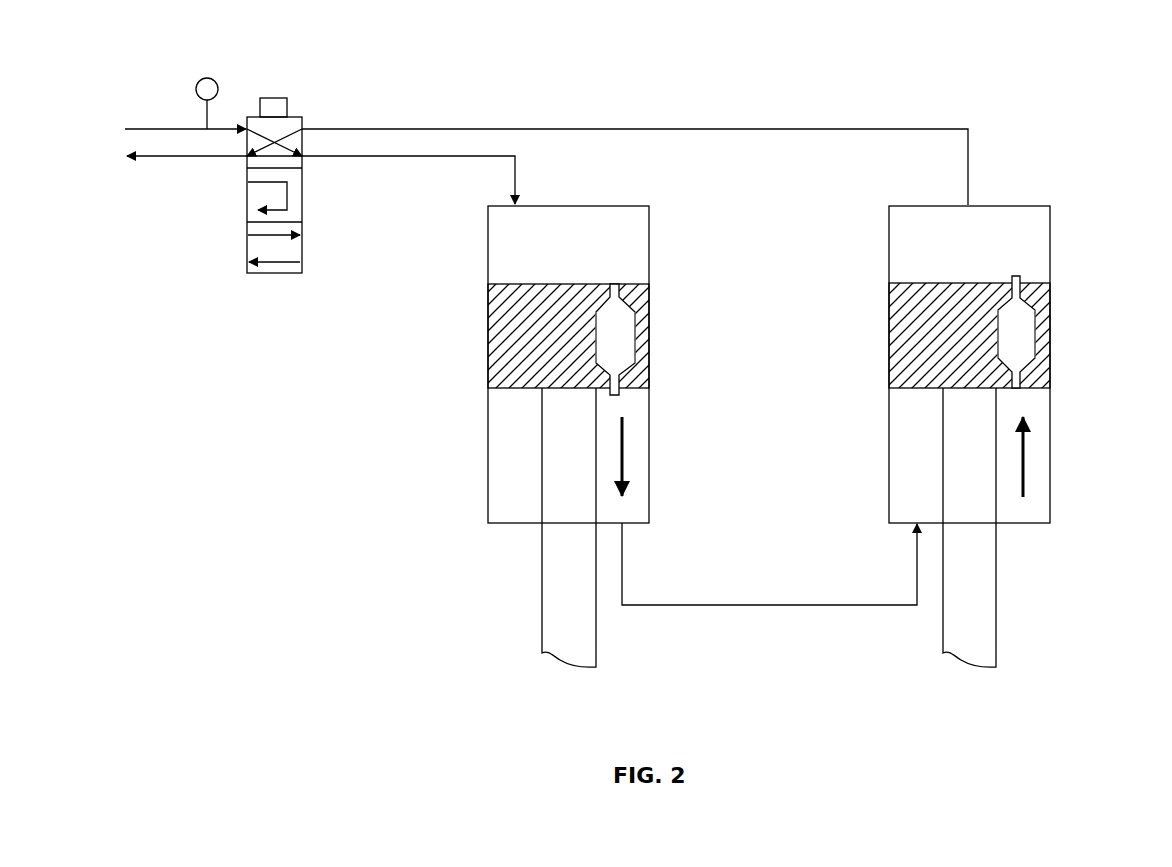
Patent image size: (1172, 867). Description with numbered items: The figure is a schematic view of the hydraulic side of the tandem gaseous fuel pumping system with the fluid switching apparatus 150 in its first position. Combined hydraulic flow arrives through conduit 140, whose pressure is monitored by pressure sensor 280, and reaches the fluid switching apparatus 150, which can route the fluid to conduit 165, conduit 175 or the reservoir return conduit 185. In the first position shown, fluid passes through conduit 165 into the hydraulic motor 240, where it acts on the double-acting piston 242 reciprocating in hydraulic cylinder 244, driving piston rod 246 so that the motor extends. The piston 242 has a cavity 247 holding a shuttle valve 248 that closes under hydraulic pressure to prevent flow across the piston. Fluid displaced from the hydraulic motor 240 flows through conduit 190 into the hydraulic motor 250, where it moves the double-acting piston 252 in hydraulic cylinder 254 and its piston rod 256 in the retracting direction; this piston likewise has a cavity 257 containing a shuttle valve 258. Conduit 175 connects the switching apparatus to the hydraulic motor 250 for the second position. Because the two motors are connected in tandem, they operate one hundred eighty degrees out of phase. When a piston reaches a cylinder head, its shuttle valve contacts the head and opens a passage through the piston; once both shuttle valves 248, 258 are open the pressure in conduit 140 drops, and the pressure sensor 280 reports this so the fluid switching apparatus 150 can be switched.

The conduit 140 is at (138, 129).
The fluid switching apparatus 150 is at (306, 117).
The conduit 165 is at (470, 160).
The conduit 175 is at (471, 129).
The conduit 185 is at (143, 157).
The conduit 190 is at (763, 605).
The hydraulic motor 240 is at (615, 206).
The double-acting piston 242 is at (510, 284).
The hydraulic cylinder 244 is at (649, 430).
The piston rod 246 is at (542, 605).
The cavity 247 is at (635, 312).
The shuttle valve 248 is at (622, 337).
The hydraulic motor 250 is at (909, 206).
The double-acting piston 252 is at (913, 283).
The hydraulic cylinder 254 is at (889, 445).
The piston rod 256 is at (996, 605).
The cavity 257 is at (1030, 368).
The shuttle valve 258 is at (1022, 338).
The pressure sensor 280 is at (196, 84).